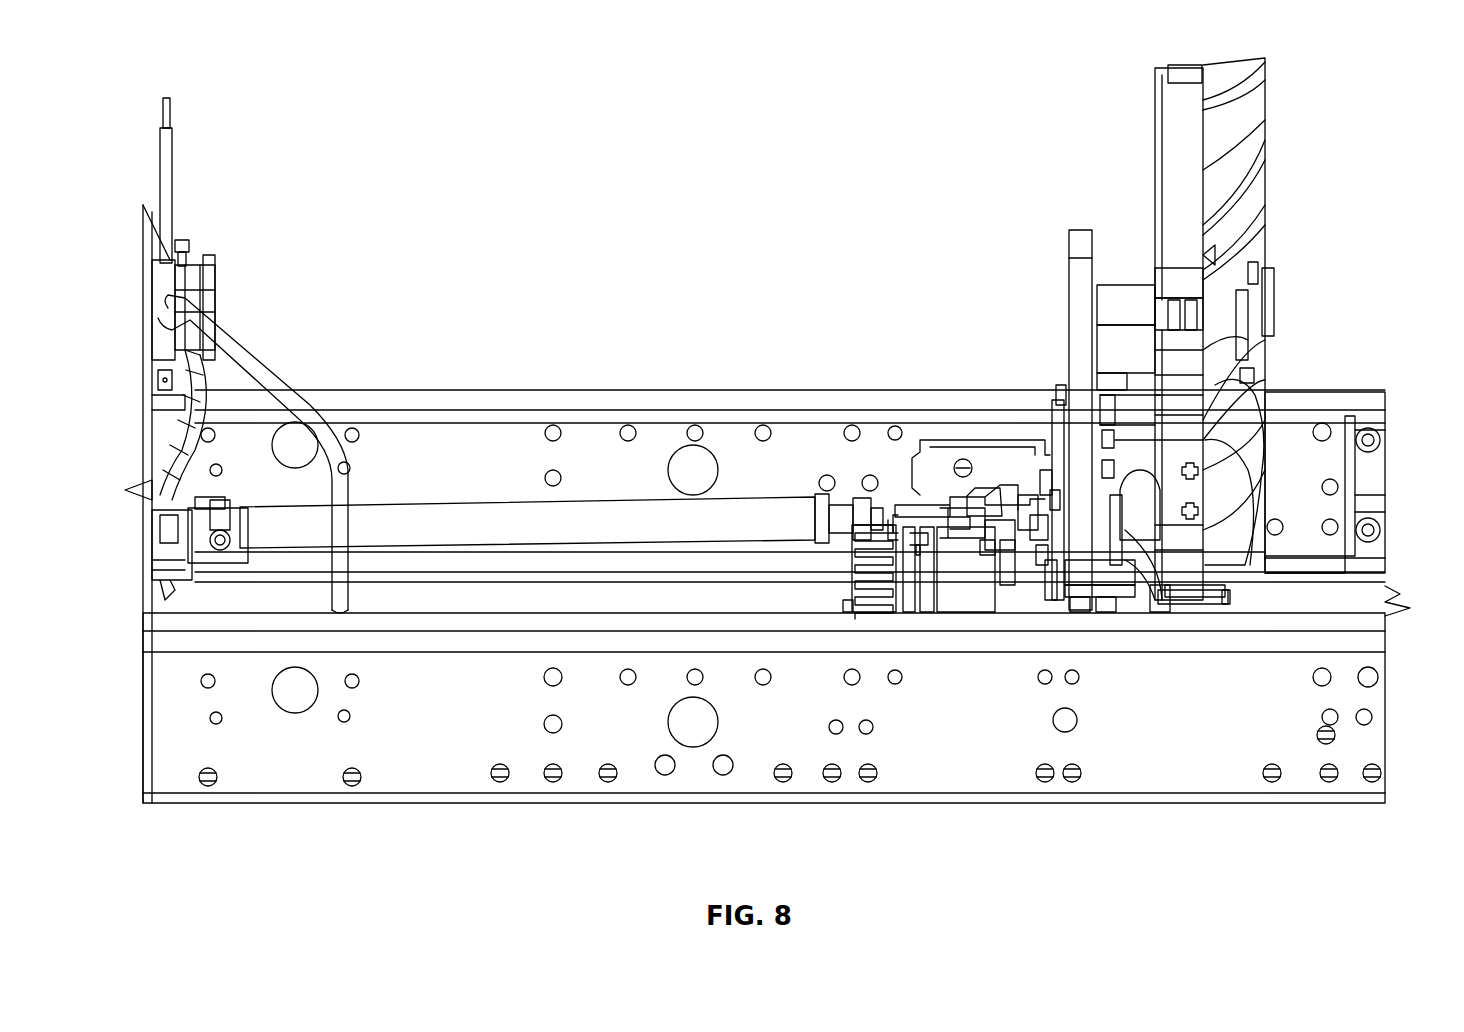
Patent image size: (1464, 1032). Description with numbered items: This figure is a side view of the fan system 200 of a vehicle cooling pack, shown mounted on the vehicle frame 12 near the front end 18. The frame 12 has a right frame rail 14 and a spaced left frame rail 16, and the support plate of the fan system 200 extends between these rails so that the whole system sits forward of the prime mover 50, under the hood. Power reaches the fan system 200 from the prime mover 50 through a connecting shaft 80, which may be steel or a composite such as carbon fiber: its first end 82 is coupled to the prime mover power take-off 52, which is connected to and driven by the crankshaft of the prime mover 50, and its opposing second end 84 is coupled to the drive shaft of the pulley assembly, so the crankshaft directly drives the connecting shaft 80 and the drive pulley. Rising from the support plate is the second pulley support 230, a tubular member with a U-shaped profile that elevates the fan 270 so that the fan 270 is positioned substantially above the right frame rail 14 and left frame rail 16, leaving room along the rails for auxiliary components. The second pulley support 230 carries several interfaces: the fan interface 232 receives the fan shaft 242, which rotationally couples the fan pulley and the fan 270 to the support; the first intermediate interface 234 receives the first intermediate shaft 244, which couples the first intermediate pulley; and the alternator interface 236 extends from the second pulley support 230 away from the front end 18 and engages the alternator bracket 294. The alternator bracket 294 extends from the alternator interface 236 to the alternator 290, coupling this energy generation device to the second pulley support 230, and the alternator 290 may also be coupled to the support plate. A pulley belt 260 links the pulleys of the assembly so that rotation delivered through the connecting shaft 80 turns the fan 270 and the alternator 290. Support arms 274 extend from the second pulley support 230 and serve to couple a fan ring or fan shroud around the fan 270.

The frame 12 is at (558, 372).
The right frame rail 14 is at (388, 778).
The left frame rail 16 is at (655, 435).
The front end 18 is at (1410, 423).
The prime mover 50 is at (128, 442).
The prime mover power take-off 52 is at (210, 488).
The connecting shaft 80 is at (650, 530).
The first end 82 is at (218, 565).
The second end 84 is at (838, 552).
The fan system 200 is at (1080, 210).
The second pulley support 230 is at (1175, 605).
The fan interface 232 is at (1138, 295).
The first intermediate interface 234 is at (1140, 455).
The alternator interface 236 is at (1085, 580).
The fan shaft 242 is at (1178, 318).
The first intermediate shaft 244 is at (1110, 383).
The pulley belt 260 is at (1082, 268).
The fan 270 is at (1255, 405).
The support arms 274 is at (1178, 78).
The alternator 290 is at (1035, 540).
The alternator bracket 294 is at (957, 590).